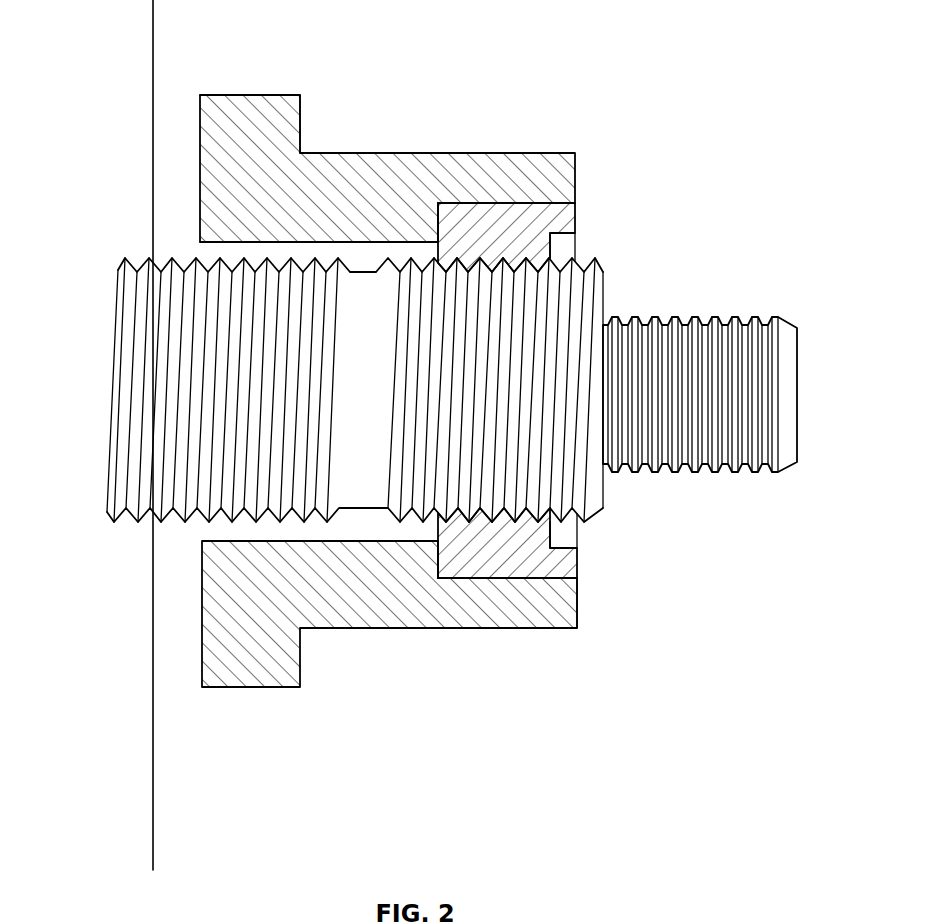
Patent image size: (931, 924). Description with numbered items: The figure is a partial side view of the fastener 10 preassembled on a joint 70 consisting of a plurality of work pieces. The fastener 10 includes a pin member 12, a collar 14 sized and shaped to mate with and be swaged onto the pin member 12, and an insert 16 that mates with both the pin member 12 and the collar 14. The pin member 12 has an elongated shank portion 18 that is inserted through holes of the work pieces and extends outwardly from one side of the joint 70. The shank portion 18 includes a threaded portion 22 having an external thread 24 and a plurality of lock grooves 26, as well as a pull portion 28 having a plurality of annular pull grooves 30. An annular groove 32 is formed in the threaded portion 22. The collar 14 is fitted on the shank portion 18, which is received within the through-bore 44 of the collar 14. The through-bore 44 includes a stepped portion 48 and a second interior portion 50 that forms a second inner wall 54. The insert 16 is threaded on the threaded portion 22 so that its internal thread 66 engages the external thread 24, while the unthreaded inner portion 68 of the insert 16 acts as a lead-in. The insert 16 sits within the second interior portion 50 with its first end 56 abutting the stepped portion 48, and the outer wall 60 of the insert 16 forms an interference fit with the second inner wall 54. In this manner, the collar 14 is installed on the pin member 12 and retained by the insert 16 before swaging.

The fastener 10 is at (645, 55).
The pin member 12 is at (160, 470).
The collar 14 is at (383, 162).
The insert 16 is at (507, 217).
The shank portion 18 is at (200, 515).
The threaded portion 22 is at (427, 422).
The external thread 24 is at (482, 512).
The lock grooves 26 is at (233, 262).
The pull portion 28 is at (700, 361).
The pull grooves 30 is at (685, 320).
The annular groove 32 is at (358, 295).
The through-bore 44 is at (200, 242).
The stepped portion 48 is at (438, 561).
The second interior portion 50 is at (468, 203).
The second inner wall 54 is at (508, 578).
The first end 56 is at (440, 552).
The outer wall 60 is at (577, 605).
The internal thread 66 is at (507, 263).
The unthreaded inner portion 68 is at (567, 535).
The joint 70 is at (153, 113).